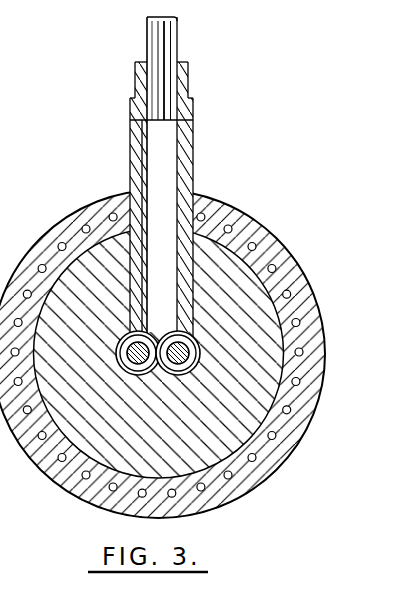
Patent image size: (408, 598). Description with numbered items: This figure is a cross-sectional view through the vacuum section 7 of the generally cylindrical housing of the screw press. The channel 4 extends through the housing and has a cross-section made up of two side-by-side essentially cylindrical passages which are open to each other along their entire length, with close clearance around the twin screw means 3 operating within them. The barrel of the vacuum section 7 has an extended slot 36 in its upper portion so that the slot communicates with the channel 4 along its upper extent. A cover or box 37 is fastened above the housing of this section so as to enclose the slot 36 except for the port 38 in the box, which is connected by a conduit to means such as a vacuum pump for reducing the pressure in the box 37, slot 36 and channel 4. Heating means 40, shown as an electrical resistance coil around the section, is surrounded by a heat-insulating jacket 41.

The screw means 3 is at (162, 376).
The channel 4 is at (197, 365).
The vacuum section 7 is at (262, 494).
The slot 36 is at (173, 282).
The box 37 is at (108, 90).
The port 38 is at (157, 124).
The heating means 40 is at (277, 264).
The heat-insulating jacket 41 is at (248, 213).